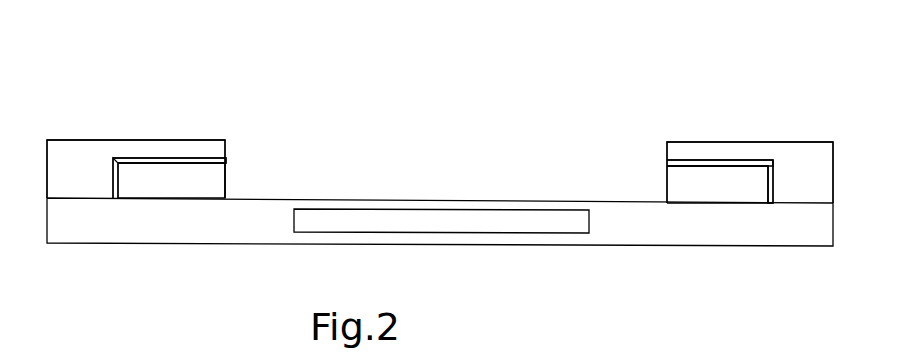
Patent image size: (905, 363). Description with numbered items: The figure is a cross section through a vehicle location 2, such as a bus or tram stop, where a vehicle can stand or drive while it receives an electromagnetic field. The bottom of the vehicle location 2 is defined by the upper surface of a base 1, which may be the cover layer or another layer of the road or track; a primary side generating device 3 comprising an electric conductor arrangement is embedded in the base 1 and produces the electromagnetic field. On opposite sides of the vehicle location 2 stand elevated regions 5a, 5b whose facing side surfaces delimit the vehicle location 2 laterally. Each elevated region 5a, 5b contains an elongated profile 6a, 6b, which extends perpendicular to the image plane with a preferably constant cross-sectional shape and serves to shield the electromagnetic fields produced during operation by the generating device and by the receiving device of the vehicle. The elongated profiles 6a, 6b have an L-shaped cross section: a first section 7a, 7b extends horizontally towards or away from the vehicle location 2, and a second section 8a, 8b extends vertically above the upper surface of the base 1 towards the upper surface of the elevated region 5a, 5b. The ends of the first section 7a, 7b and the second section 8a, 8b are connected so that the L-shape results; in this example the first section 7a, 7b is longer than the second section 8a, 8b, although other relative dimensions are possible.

The base 1 is at (245, 208).
The vehicle location 2 is at (448, 169).
The primary side generating device 3 is at (367, 223).
The elevated region 5a is at (90, 140).
The elevated region 5b is at (800, 142).
The elongated profile 6a is at (165, 157).
The elongated profile 6b is at (697, 160).
The first section 7a is at (207, 158).
The first section 7b is at (742, 160).
The second section 8a is at (112, 185).
The second section 8b is at (765, 193).